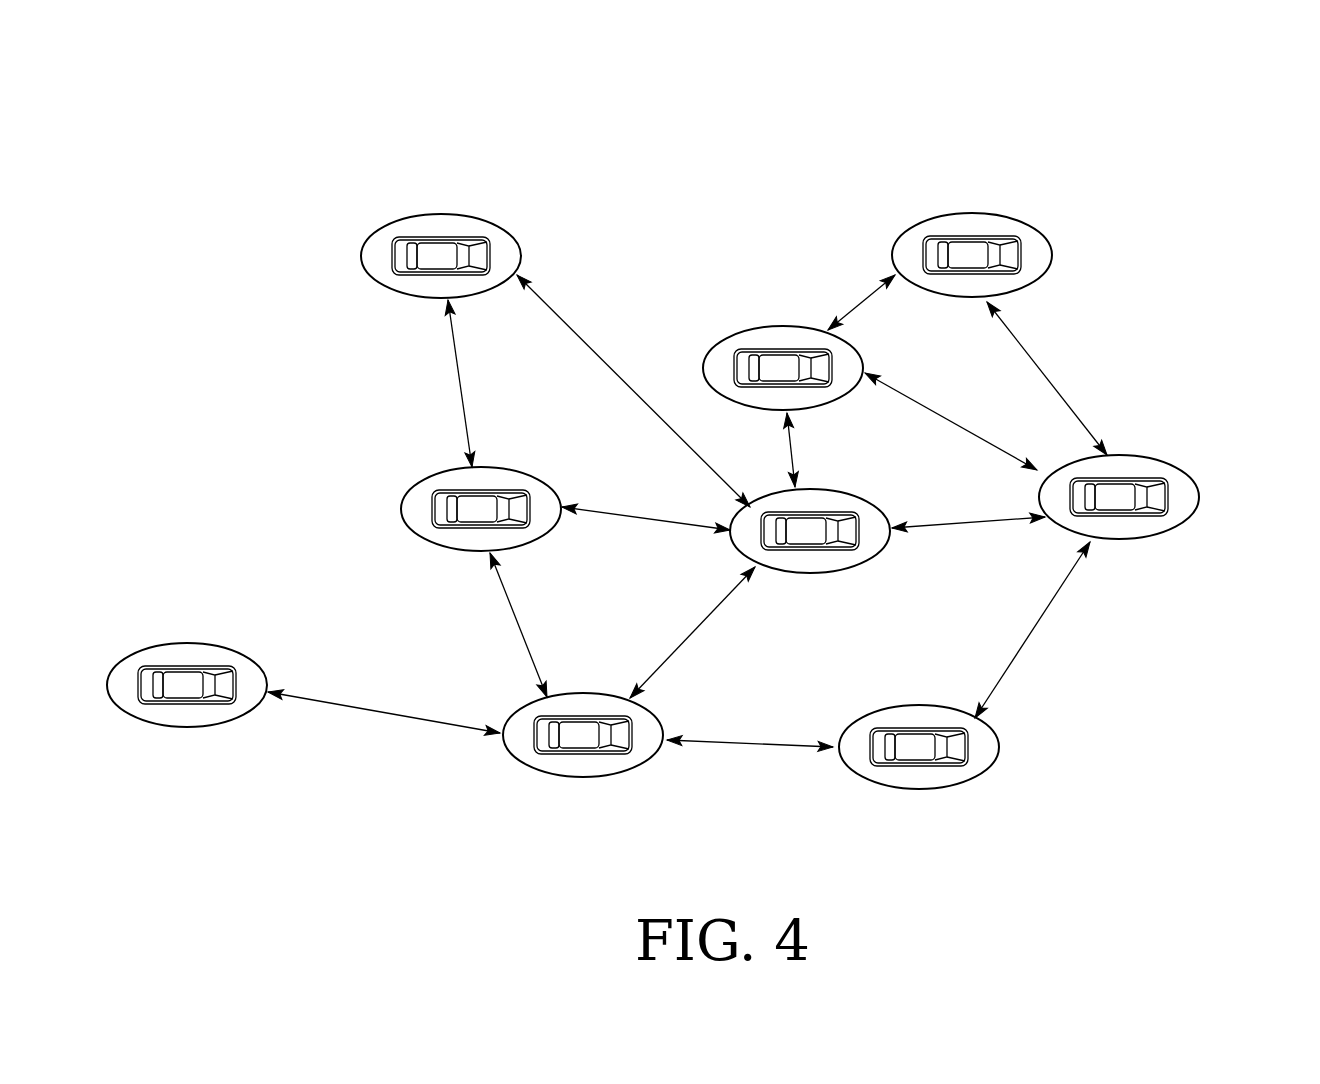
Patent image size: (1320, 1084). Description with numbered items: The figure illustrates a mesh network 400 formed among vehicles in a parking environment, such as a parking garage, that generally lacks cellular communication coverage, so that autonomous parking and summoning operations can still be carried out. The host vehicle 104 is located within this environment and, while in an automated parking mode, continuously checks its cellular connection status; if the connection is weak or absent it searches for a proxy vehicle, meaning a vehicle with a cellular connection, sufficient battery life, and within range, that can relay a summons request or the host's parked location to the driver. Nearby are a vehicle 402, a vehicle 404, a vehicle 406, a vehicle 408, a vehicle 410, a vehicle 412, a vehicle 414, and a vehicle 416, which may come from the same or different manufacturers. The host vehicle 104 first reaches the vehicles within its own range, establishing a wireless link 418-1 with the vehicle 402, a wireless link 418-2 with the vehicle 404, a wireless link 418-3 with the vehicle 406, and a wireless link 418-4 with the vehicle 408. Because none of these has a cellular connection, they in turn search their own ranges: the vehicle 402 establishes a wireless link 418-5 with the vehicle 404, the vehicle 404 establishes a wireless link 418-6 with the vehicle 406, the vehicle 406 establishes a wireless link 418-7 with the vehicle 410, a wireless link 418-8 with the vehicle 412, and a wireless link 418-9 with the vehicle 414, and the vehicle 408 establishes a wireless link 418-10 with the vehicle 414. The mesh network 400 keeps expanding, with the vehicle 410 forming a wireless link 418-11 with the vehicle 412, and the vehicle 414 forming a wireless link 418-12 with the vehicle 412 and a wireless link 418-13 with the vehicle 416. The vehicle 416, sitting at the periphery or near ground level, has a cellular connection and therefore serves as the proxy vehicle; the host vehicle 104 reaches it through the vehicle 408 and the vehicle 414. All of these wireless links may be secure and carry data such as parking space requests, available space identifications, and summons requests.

The mesh network 400 is at (1226, 83).
The host vehicle 104 is at (1200, 497).
The vehicle 402 is at (1050, 253).
The vehicle 404 is at (762, 330).
The vehicle 406 is at (860, 493).
The vehicle 408 is at (937, 790).
The vehicle 410 is at (428, 213).
The vehicle 412 is at (427, 480).
The vehicle 414 is at (590, 778).
The vehicle 416 is at (180, 642).
The wireless link 418-1 is at (1045, 373).
The wireless link 418-2 is at (922, 403).
The wireless link 418-3 is at (942, 523).
The wireless link 418-4 is at (1035, 625).
The wireless link 418-5 is at (862, 297).
The wireless link 418-6 is at (792, 447).
The wireless link 418-7 is at (582, 337).
The wireless link 418-8 is at (655, 520).
The wireless link 418-9 is at (703, 623).
The wireless link 418-10 is at (722, 745).
The wireless link 418-11 is at (458, 378).
The wireless link 418-12 is at (510, 615).
The wireless link 418-13 is at (378, 712).